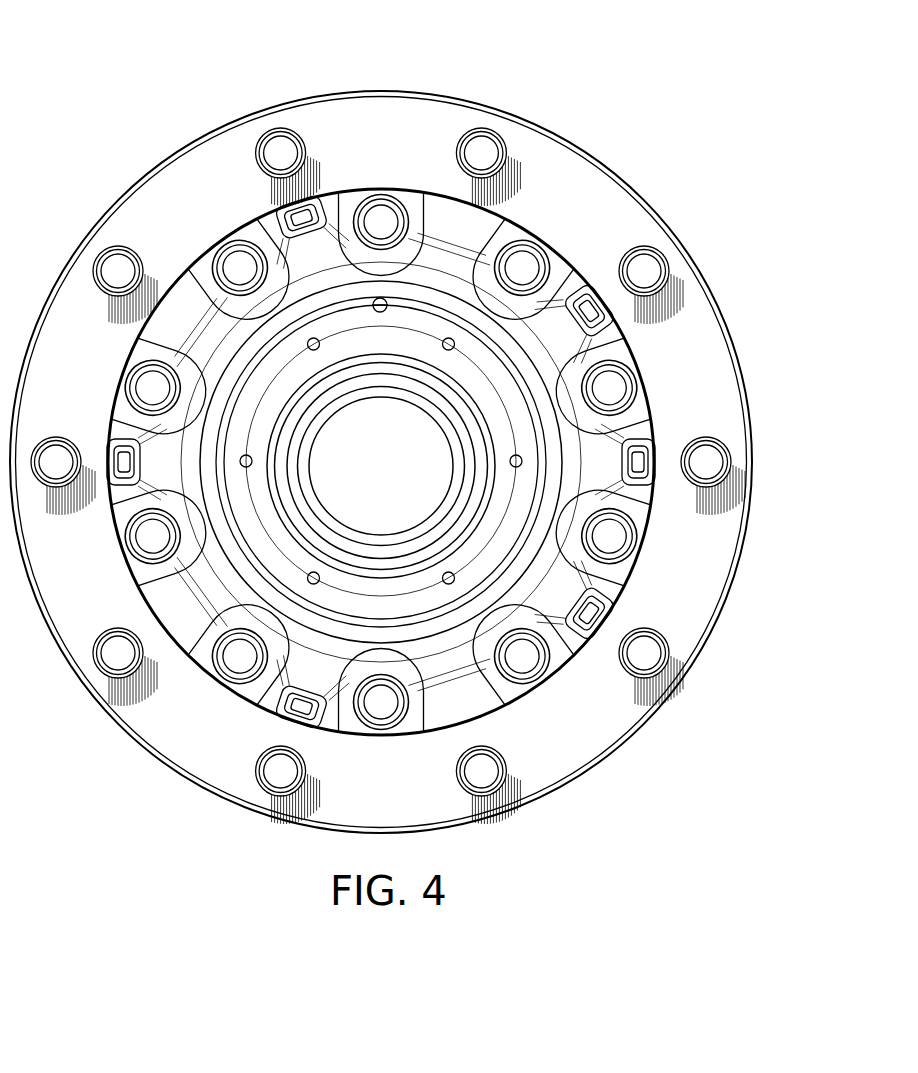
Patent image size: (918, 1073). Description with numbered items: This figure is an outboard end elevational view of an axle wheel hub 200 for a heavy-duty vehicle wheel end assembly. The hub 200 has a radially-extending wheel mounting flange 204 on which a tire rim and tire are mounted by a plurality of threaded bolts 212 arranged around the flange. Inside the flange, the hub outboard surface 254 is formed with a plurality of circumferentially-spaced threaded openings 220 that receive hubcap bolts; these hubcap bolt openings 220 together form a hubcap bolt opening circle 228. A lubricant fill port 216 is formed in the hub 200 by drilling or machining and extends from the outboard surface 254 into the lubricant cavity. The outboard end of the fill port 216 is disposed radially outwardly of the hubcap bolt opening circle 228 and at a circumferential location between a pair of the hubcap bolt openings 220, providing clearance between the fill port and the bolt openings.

The axle wheel hub 200 is at (410, 427).
The wheel mounting flange 204 is at (727, 388).
The threaded bolts 212 is at (690, 630).
The lubricant fill port 216 is at (390, 305).
The threaded openings 220 is at (455, 343).
The hubcap bolt opening circle 228 is at (510, 497).
The outboard surface 254 is at (318, 302).